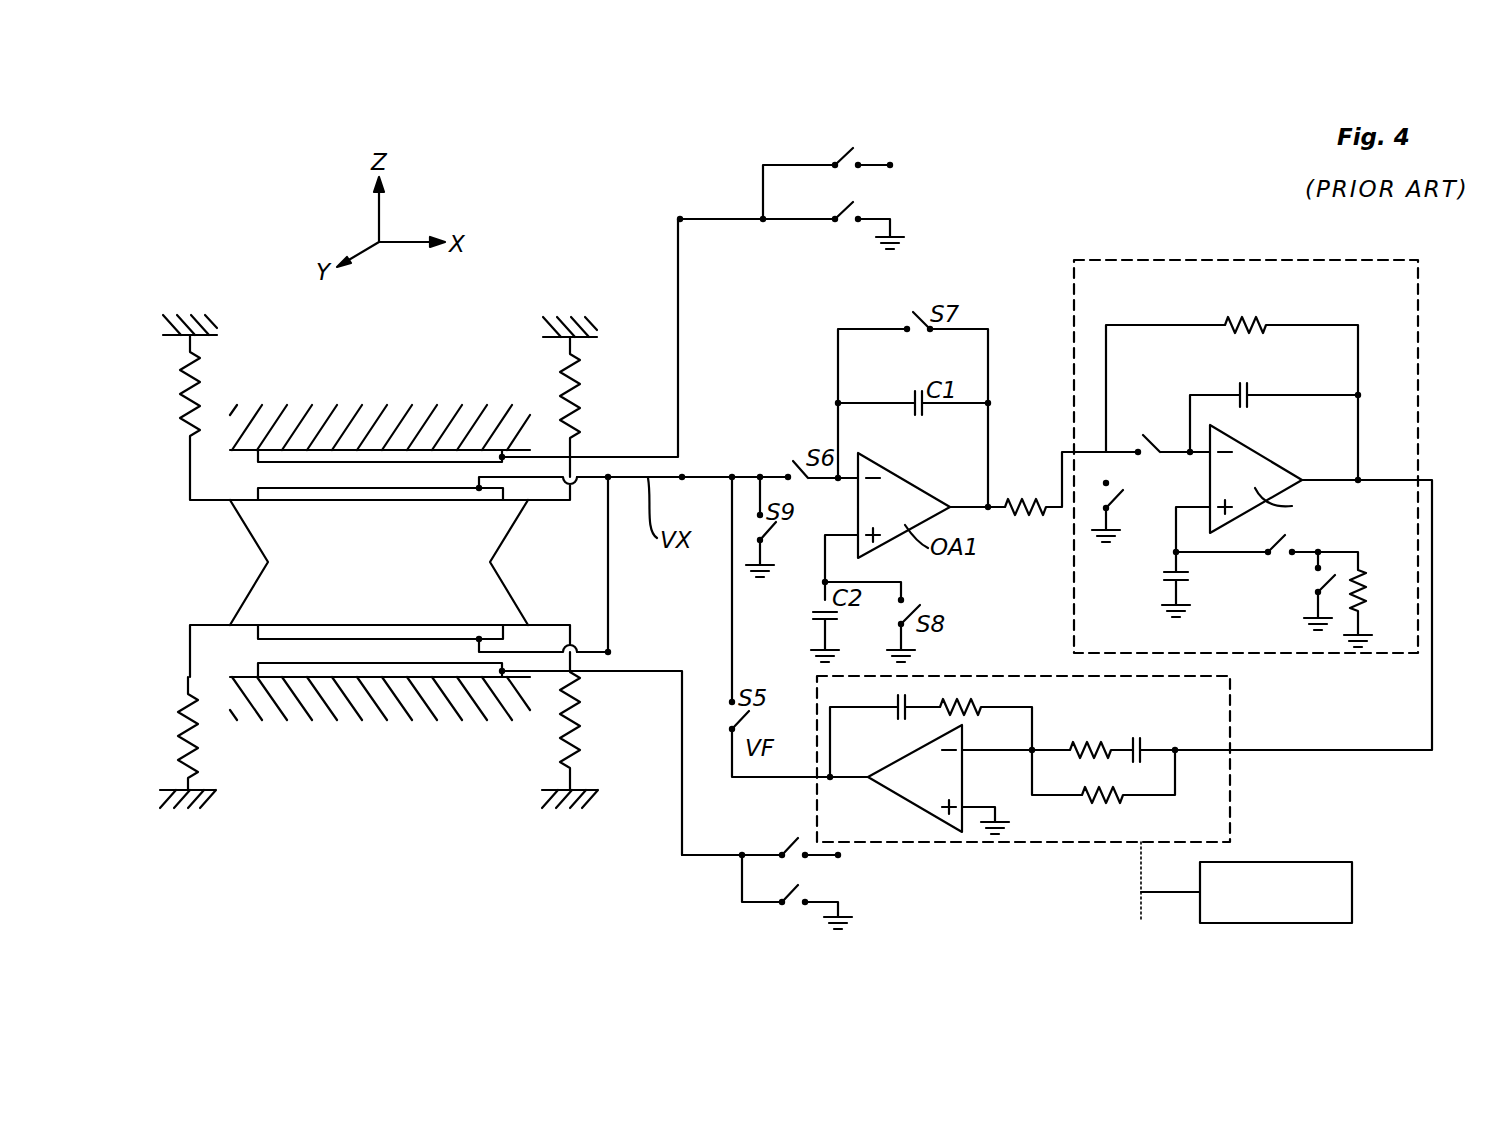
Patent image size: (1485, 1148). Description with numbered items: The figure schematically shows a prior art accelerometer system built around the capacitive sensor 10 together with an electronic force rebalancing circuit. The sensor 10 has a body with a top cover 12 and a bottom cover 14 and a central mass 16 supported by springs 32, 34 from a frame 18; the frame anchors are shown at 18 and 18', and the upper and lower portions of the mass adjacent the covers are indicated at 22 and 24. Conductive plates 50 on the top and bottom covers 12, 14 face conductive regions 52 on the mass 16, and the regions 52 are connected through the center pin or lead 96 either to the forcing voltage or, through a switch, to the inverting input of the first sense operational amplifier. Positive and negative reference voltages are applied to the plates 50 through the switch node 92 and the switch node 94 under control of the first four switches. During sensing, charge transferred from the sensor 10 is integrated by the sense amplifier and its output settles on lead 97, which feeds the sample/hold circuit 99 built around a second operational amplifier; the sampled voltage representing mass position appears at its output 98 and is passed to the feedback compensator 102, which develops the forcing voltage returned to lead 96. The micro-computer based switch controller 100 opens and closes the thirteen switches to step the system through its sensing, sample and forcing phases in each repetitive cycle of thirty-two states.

The capacitive sensor 10 is at (590, 412).
The top cover 12 is at (342, 412).
The bottom cover 14 is at (365, 712).
The central mass 16 is at (446, 588).
The frame 18 is at (200, 300).
The anchor (support) 18' is at (396, 561).
The upper mass plate portion 22 is at (246, 500).
The lower mass plate portion 24 is at (247, 627).
The spring 32 is at (196, 410).
The spring 34 is at (193, 752).
The conductive plate 50 is at (428, 455).
The conductive region 52 is at (400, 495).
The reference voltage node 92 is at (692, 222).
The negative reference voltage node 94 is at (720, 855).
The center pin or lead 96 is at (694, 477).
The lead 97 is at (1000, 512).
The output 98 is at (1385, 480).
The sample/hold circuit 99 is at (1206, 258).
The switch controller 100 is at (1352, 888).
The feedback compensator 102 is at (1232, 812).